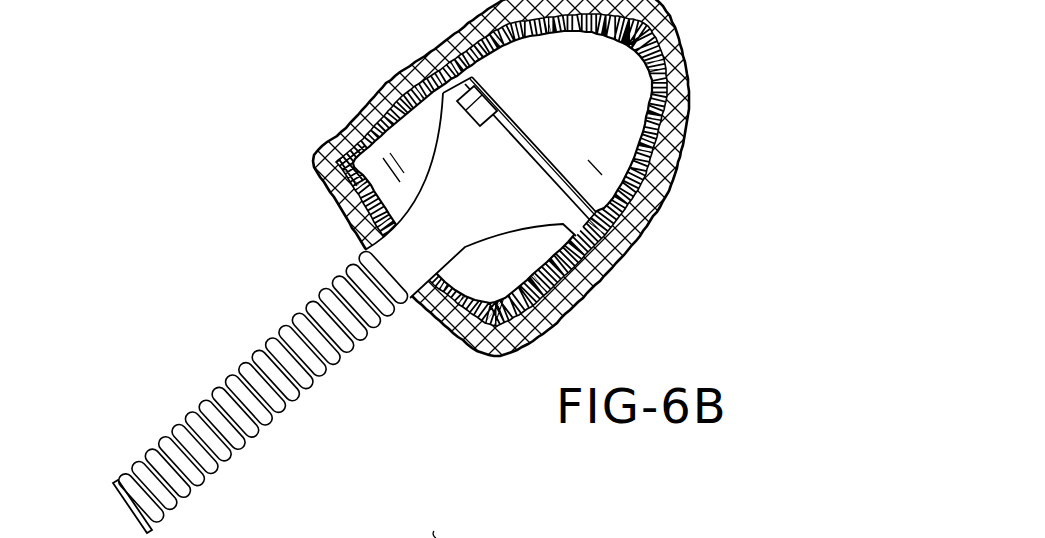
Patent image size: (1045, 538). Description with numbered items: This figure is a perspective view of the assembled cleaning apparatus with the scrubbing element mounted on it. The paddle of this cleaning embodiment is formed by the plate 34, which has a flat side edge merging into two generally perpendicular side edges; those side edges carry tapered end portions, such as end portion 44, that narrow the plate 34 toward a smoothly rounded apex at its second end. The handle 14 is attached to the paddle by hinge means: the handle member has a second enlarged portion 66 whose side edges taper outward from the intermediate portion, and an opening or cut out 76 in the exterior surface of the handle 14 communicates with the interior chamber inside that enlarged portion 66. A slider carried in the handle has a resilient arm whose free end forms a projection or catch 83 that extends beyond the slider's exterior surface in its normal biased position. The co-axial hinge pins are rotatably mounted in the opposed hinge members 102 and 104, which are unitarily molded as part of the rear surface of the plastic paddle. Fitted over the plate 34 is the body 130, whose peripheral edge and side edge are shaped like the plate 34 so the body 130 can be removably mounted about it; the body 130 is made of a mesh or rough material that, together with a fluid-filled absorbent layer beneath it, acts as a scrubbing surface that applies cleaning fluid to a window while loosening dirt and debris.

The handle 14 is at (270, 338).
The plate 34 is at (630, 120).
The end portion 44 is at (453, 521).
The second enlarged portion 66 is at (470, 246).
The opening or cut out 76 is at (490, 122).
The projection or catch 83 is at (471, 97).
The hinge member 102 is at (432, 64).
The hinge member 104 is at (614, 233).
The body 130 is at (670, 163).